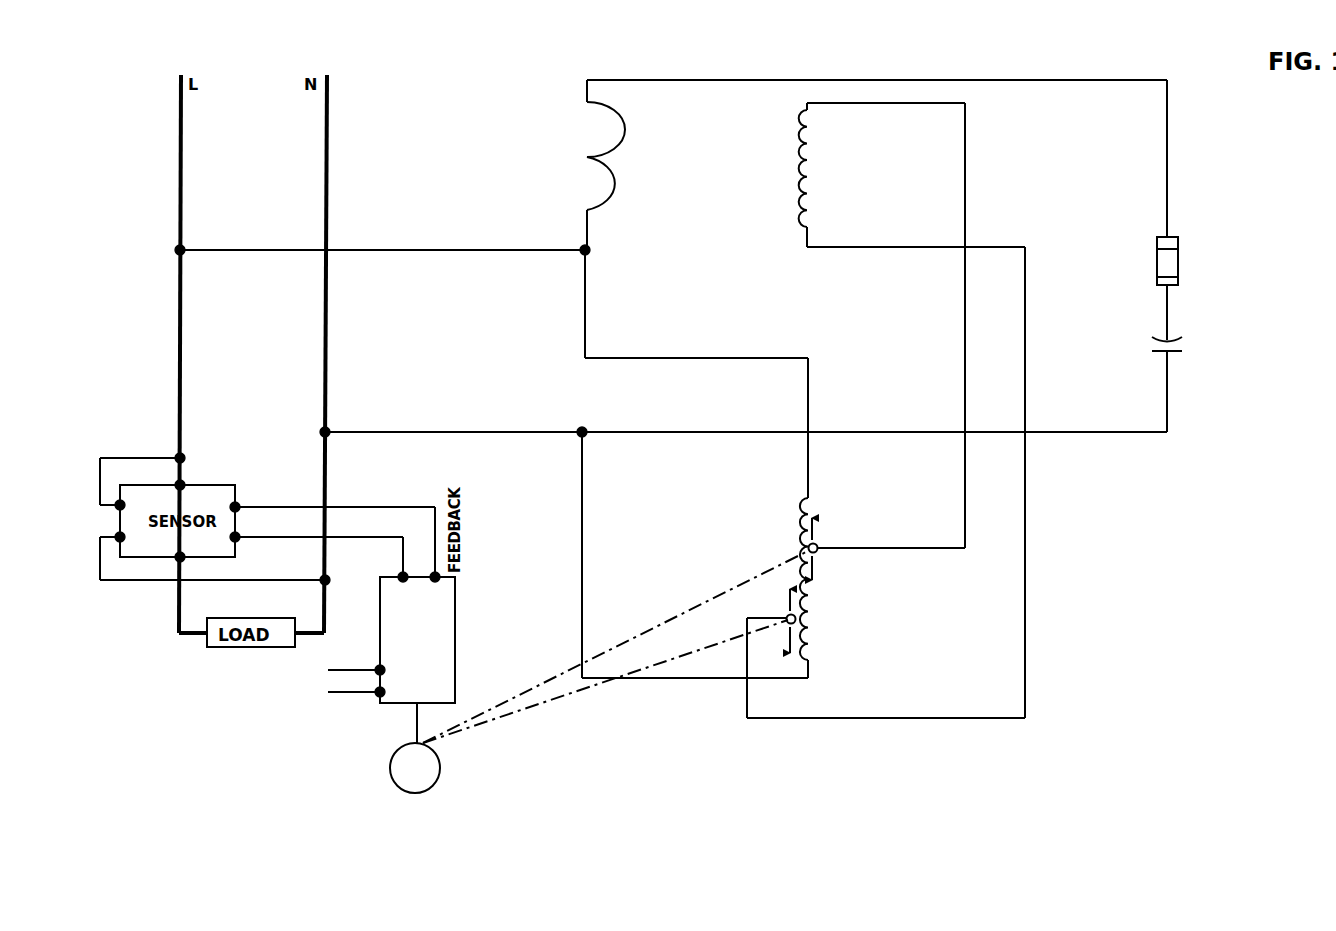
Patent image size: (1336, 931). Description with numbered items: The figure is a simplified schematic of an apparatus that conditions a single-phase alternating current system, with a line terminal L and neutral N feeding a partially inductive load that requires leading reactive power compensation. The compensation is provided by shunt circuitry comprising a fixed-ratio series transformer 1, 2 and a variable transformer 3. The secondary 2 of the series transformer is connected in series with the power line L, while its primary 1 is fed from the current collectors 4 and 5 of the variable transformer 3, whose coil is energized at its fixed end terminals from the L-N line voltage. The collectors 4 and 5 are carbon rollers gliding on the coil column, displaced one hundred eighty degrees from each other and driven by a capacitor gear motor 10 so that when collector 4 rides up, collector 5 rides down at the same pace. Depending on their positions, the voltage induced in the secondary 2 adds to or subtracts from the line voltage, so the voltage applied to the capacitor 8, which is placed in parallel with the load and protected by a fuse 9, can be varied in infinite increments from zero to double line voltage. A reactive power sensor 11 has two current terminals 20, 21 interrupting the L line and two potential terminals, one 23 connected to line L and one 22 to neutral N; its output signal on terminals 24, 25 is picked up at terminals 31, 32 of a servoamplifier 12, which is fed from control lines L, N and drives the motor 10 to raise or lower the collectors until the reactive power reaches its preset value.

The primary of the fixed-ratio series transformer 1 is at (828, 324).
The secondary of the fixed-ratio series transformer 2 is at (616, 156).
The variable transformer 3 is at (827, 588).
The current collector 4 is at (887, 549).
The current collector 5 is at (781, 621).
The capacitor 8 is at (1212, 352).
The fuse 9 is at (1179, 261).
The capacitor gear motor 10 is at (600, 675).
The reactive power sensor 11 is at (215, 561).
The servoamplifier 12 is at (386, 656).
The current terminal 20 is at (190, 478).
The current terminal 21 is at (170, 551).
The potential terminal 22 is at (129, 538).
The potential terminal 23 is at (129, 506).
The sensor output terminal 24 is at (332, 533).
The sensor output terminal 25 is at (316, 548).
The servoamplifier terminal 31 is at (394, 571).
The servoamplifier terminal 32 is at (427, 571).